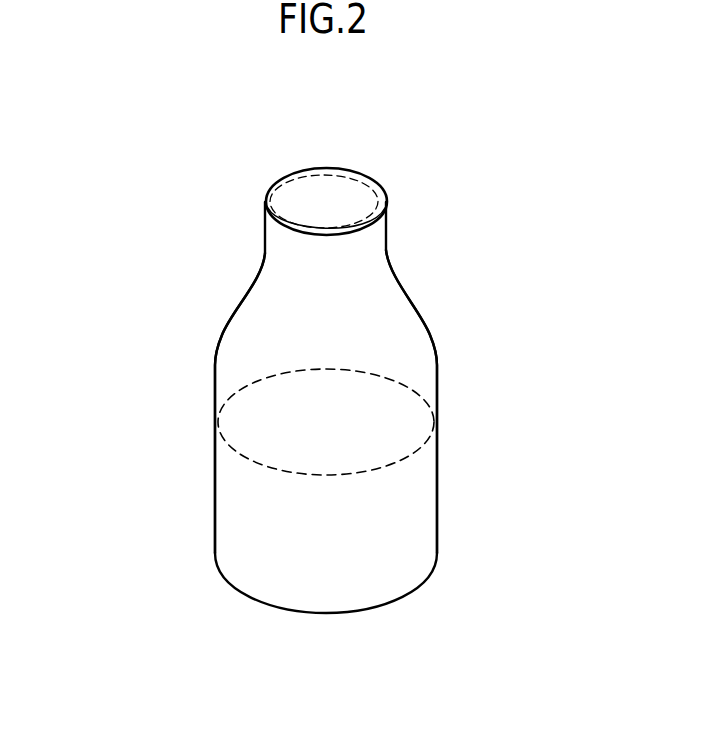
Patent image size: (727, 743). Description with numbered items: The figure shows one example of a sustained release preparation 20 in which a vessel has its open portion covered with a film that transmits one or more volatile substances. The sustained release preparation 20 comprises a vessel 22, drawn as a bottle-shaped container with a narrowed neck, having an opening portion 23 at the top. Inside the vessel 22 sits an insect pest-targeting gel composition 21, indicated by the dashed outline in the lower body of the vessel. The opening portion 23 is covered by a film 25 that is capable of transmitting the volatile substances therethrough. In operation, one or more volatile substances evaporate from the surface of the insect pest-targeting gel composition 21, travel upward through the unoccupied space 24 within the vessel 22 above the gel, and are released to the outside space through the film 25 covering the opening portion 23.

The sustained release preparation 20 is at (400, 168).
The insect pest-targeting gel composition 21 is at (400, 429).
The vessel 22 is at (215, 373).
The opening portion 23 is at (309, 196).
The unoccupied space 24 is at (413, 367).
The film 25 is at (309, 232).